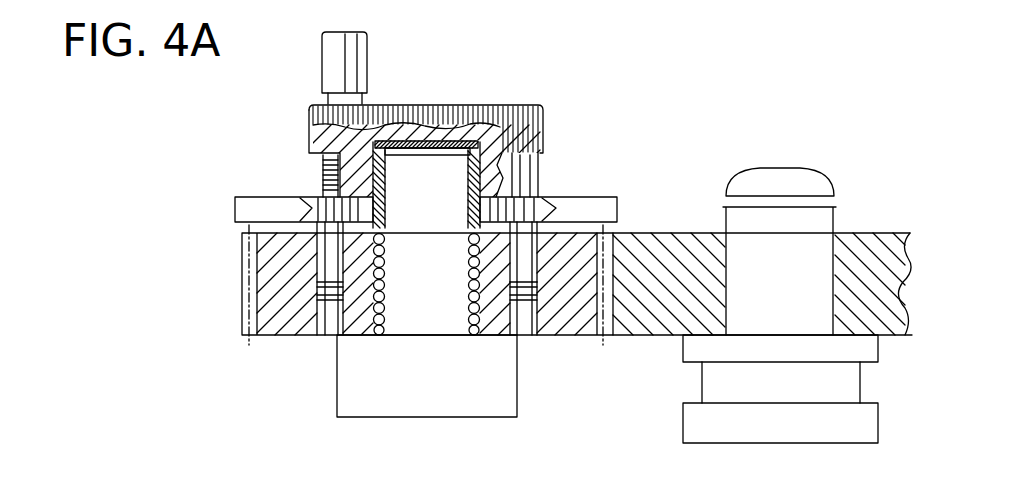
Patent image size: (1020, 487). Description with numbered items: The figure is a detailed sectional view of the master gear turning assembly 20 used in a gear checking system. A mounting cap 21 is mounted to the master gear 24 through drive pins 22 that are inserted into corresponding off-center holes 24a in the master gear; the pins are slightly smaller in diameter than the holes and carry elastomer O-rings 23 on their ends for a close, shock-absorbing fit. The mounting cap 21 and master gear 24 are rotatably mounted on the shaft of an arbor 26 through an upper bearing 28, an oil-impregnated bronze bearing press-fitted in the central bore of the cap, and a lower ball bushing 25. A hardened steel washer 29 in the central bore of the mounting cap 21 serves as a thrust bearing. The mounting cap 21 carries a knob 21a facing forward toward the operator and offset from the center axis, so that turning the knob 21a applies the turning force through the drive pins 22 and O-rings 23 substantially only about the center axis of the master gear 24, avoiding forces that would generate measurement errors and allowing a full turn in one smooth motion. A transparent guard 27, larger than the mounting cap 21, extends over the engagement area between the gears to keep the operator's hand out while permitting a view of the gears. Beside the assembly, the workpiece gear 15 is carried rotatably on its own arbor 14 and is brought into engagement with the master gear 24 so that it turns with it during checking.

The arbor 14 is at (780, 150).
The workpiece gear 15 is at (655, 255).
The master gear turning assembly 20 is at (572, 88).
The mounting cap 21 is at (385, 110).
The knob 21a is at (367, 37).
The drive pins 22 is at (524, 215).
The O-rings 23 is at (343, 291).
The master gear 24 is at (248, 296).
The off-center holes 24a is at (326, 335).
The ball bushing 25 is at (378, 330).
The arbor 26 is at (517, 402).
The transparent guard 27 is at (247, 200).
The upper bearing 28 is at (373, 160).
The hardened steel washer 29 is at (442, 140).